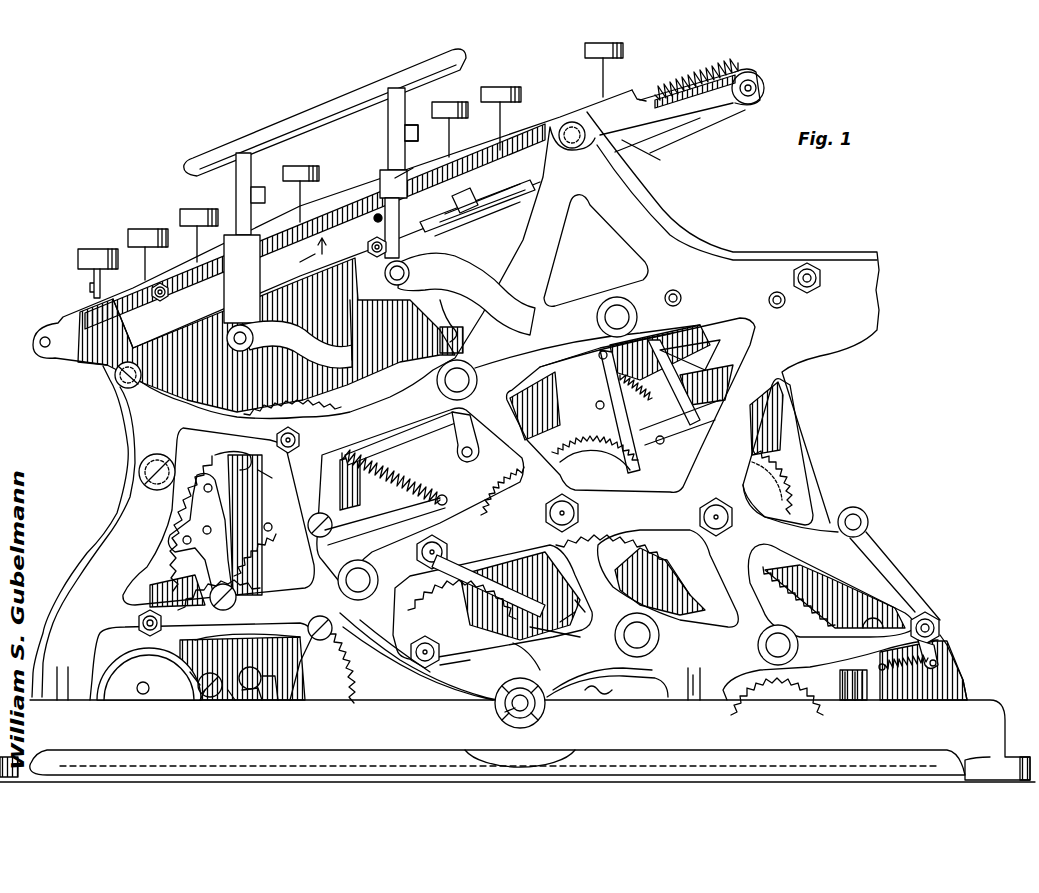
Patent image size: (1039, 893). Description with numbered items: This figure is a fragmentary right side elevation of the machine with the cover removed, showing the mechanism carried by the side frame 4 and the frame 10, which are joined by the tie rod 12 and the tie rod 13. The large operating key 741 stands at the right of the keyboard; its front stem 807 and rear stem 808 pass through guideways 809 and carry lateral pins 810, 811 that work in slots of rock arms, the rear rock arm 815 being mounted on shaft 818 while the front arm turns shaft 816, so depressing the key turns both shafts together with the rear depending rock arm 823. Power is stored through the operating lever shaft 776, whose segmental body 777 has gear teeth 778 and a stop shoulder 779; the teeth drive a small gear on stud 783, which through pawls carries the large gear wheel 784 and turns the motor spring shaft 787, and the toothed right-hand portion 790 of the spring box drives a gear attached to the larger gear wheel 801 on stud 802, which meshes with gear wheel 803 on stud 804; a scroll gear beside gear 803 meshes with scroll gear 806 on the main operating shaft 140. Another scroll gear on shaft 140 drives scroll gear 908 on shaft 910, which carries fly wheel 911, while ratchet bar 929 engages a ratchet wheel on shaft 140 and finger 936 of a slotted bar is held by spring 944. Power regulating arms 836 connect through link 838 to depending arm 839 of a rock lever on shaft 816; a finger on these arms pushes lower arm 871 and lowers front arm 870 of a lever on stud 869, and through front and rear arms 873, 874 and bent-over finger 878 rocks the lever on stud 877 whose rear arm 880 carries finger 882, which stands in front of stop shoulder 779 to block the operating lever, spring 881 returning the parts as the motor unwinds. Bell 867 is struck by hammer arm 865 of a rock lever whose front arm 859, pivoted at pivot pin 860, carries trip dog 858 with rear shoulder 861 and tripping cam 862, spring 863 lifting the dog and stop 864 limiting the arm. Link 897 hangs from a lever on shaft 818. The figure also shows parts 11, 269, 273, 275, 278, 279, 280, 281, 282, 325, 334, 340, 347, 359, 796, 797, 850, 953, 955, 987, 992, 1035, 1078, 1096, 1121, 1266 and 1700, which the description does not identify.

The side frame 4 is at (499, 406).
The frame 10 is at (555, 382).
The screw stud 11 is at (803, 267).
The tie rod 12 is at (162, 623).
The tie rod 13 is at (940, 626).
The main operating shaft 140 is at (760, 648).
The key 269 is at (300, 170).
The stud 273 is at (374, 218).
The bar 275 is at (420, 233).
The screw 278 is at (134, 388).
The pivot stud 279 is at (575, 150).
The pivot stud 280 is at (766, 84).
The stud 281 is at (377, 258).
The stud 282 is at (160, 300).
The spring 325 is at (678, 92).
The lever 334 is at (670, 152).
The slide 340 is at (500, 232).
The bar 347 is at (482, 217).
The arm 359 is at (695, 138).
The operating key 741 is at (388, 116).
The operating lever shaft 776 is at (504, 712).
The segmental body 777 is at (550, 636).
The gear teeth 778 is at (548, 655).
The stop shoulder 779 is at (562, 621).
The stud 783 is at (440, 655).
The large gear wheel 784 is at (430, 680).
The motor spring shaft 787 is at (340, 590).
The right-hand portion of spring box 790 is at (560, 574).
The main shaft bearing 796 is at (542, 714).
The arm 797 is at (480, 668).
The larger gear wheel 801 is at (595, 458).
The stud 802 is at (548, 518).
The gear wheel 803 is at (771, 481).
The stud 804 is at (700, 514).
The scroll gear 806 is at (785, 693).
The front stem 807 is at (236, 180).
The rear stem 808 is at (400, 130).
The guideways 809 is at (405, 178).
The lateral pin 810 is at (256, 330).
The lateral pin 811 is at (392, 284).
The rear rock arm 815 is at (450, 270).
The shaft 816 is at (468, 372).
The shaft 818 is at (637, 317).
The rear depending rock arm 823 is at (649, 385).
The power regulating arms 836 is at (240, 552).
The link 838 is at (392, 455).
The depending arm 839 is at (458, 430).
The sector gear 850 is at (191, 523).
The trip dog 858 is at (232, 698).
The front arm 859 is at (200, 691).
The pivot pin 860 is at (260, 674).
The rear shoulder 861 is at (262, 684).
The tripping cam 862 is at (198, 686).
The spring 863 is at (172, 654).
The stop 864 is at (190, 672).
The hammer arm 865 is at (280, 690).
The bell 867 is at (124, 691).
The stud 869 is at (294, 436).
The front arm 870 is at (232, 455).
The lower arm 871 is at (272, 474).
The front arm 873 is at (290, 406).
The rear arm 874 is at (390, 518).
The stud 877 is at (420, 556).
The bent-over finger 878 is at (390, 527).
The rear arm 880 is at (486, 562).
The spring 881 is at (438, 494).
The bent-over finger 882 is at (462, 599).
The link 897 is at (812, 502).
The scroll gear 908 is at (612, 694).
The shaft 910 is at (656, 641).
The fly wheel 911 is at (575, 600).
The ratchet bar 929 is at (832, 690).
The depending rear finger 936 is at (938, 650).
The spring 944 is at (935, 668).
The lever 953 is at (633, 411).
The link 955 is at (692, 430).
The key 987 is at (590, 48).
The lever 992 is at (684, 382).
The lever 1035 is at (450, 310).
The key 1078 is at (96, 256).
The key 1096 is at (146, 236).
The pointer 1121 is at (341, 244).
The key 1266 is at (530, 86).
The bar 1700 is at (354, 325).